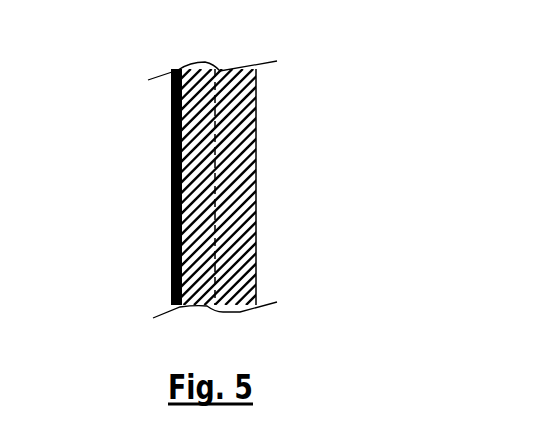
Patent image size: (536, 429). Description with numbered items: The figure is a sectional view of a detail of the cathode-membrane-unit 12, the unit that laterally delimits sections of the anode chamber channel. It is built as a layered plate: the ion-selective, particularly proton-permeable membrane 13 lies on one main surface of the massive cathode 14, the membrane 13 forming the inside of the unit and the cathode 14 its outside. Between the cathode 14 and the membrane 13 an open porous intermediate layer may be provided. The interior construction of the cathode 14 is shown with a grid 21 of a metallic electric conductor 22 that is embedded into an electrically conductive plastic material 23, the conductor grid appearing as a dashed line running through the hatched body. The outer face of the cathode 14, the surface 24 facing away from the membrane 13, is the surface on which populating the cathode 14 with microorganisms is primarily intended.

The cathode-membrane-unit 12 is at (246, 189).
The membrane 13 is at (172, 177).
The cathode 14 is at (240, 228).
The grid 21 is at (306, 187).
The metallic electric conductor 22 is at (215, 160).
The electrically conductive plastic material 23 is at (245, 281).
The surface 24 is at (260, 193).